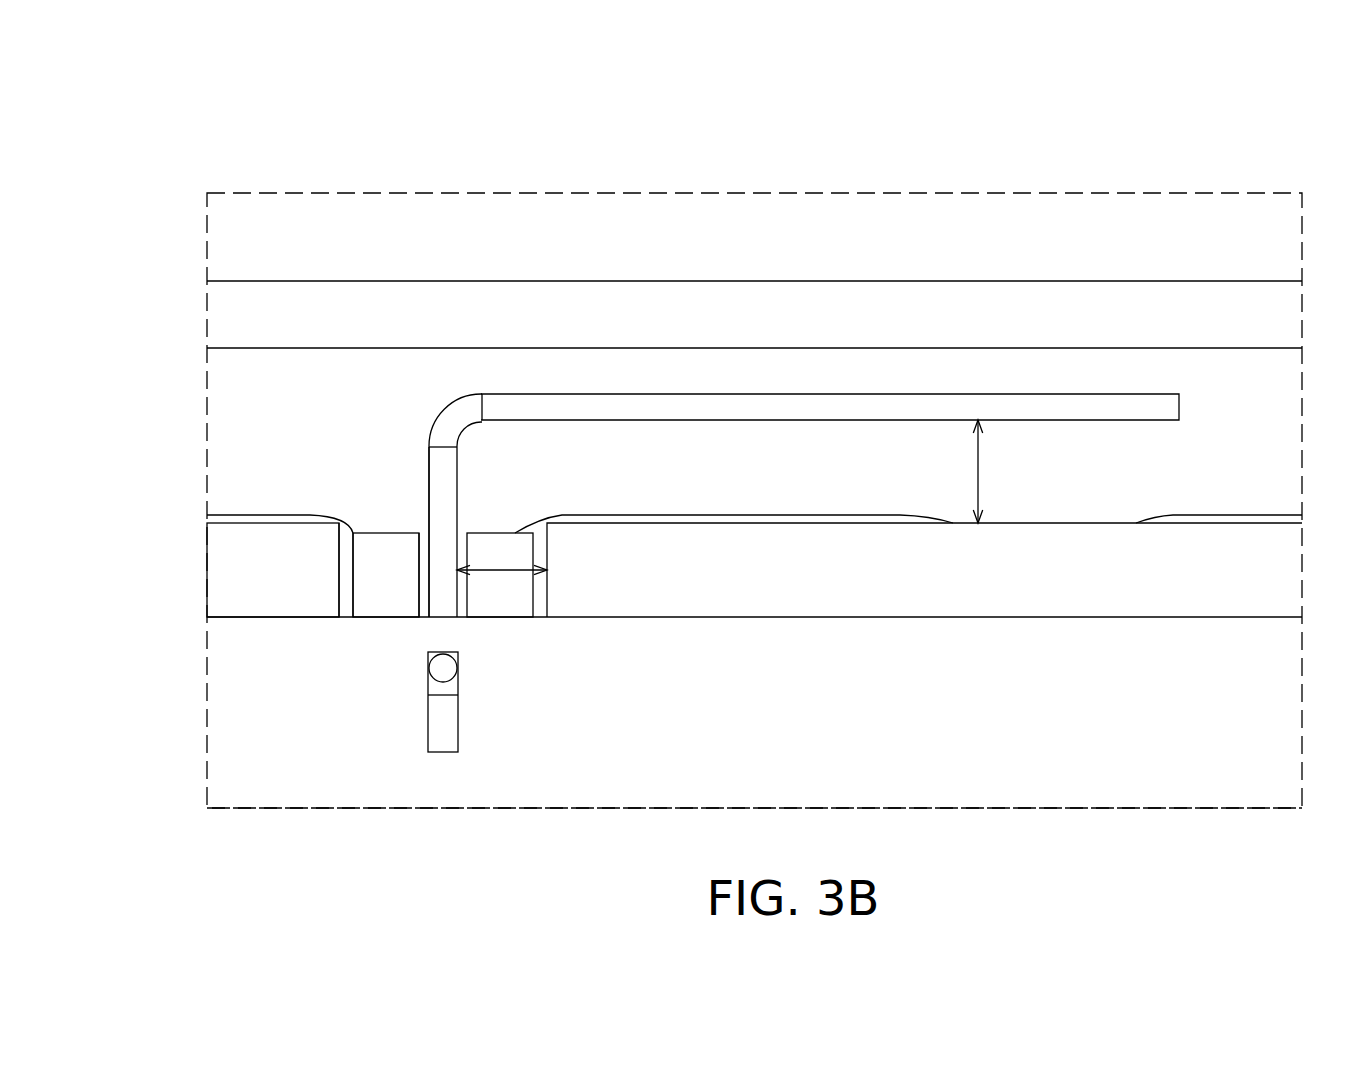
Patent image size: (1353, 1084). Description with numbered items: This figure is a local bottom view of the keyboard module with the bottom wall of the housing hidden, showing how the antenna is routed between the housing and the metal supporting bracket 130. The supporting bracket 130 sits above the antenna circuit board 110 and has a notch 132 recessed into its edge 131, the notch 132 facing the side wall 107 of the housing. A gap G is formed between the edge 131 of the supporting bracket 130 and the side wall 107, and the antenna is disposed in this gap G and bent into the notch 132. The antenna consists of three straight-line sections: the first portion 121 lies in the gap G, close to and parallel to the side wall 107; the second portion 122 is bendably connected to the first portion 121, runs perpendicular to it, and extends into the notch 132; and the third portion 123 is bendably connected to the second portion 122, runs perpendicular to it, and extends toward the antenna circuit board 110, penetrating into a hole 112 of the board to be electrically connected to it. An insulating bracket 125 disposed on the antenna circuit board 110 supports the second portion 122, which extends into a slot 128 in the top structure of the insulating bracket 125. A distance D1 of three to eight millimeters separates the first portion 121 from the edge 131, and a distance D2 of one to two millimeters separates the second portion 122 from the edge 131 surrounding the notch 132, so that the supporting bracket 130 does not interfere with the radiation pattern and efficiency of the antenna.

The side wall 107 is at (718, 313).
The antenna circuit board 110 is at (1017, 700).
The hole 112 is at (472, 722).
The first portion 121 is at (850, 405).
The second portion 122 is at (442, 470).
The third portion 123 is at (444, 668).
The insulating bracket 125 is at (396, 558).
The slot 128 is at (431, 569).
The supporting bracket 130 is at (277, 562).
The edge 131 is at (242, 507).
The notch 132 is at (355, 561).
The gap G is at (231, 445).
The distance D1 is at (961, 471).
The distance D2 is at (498, 568).